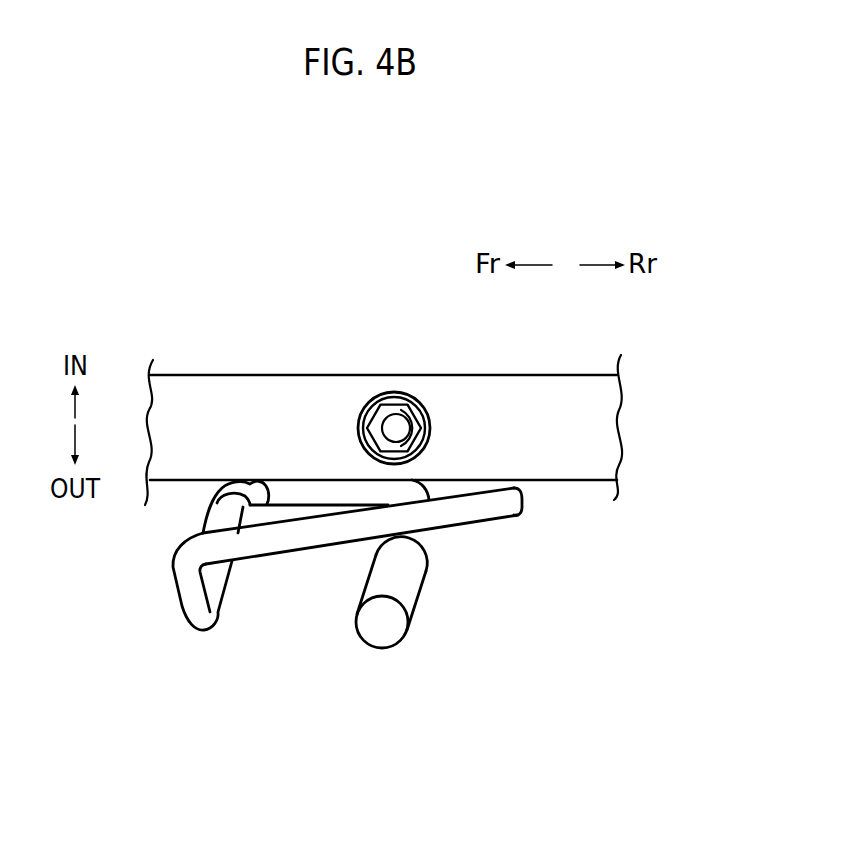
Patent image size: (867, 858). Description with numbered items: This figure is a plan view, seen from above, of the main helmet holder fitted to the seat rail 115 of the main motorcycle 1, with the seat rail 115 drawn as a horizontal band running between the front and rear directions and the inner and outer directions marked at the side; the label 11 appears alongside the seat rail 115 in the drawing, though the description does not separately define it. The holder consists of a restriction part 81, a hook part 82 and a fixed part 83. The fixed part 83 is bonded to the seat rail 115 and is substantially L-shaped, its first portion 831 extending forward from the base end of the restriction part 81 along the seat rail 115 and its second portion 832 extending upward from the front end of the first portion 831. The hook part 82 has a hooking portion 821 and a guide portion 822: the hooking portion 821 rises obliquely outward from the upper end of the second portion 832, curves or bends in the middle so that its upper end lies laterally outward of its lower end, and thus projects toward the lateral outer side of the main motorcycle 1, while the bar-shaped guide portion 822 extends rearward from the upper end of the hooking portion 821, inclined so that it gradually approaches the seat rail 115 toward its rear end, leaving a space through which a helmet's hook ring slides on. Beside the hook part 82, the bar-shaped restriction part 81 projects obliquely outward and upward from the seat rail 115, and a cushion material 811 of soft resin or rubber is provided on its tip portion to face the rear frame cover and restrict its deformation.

The main motorcycle 1 is at (578, 774).
The vehicle body 11 is at (383, 408).
The seat rail 115 is at (332, 407).
The restriction part 81 is at (428, 535).
The cushion material 811 is at (388, 620).
The hook part 82 is at (352, 730).
The hooking portion 821 is at (192, 605).
The guide portion 822 is at (322, 538).
The fixed part 83 is at (322, 302).
The first portion 831 is at (312, 490).
The second portion 832 is at (240, 490).